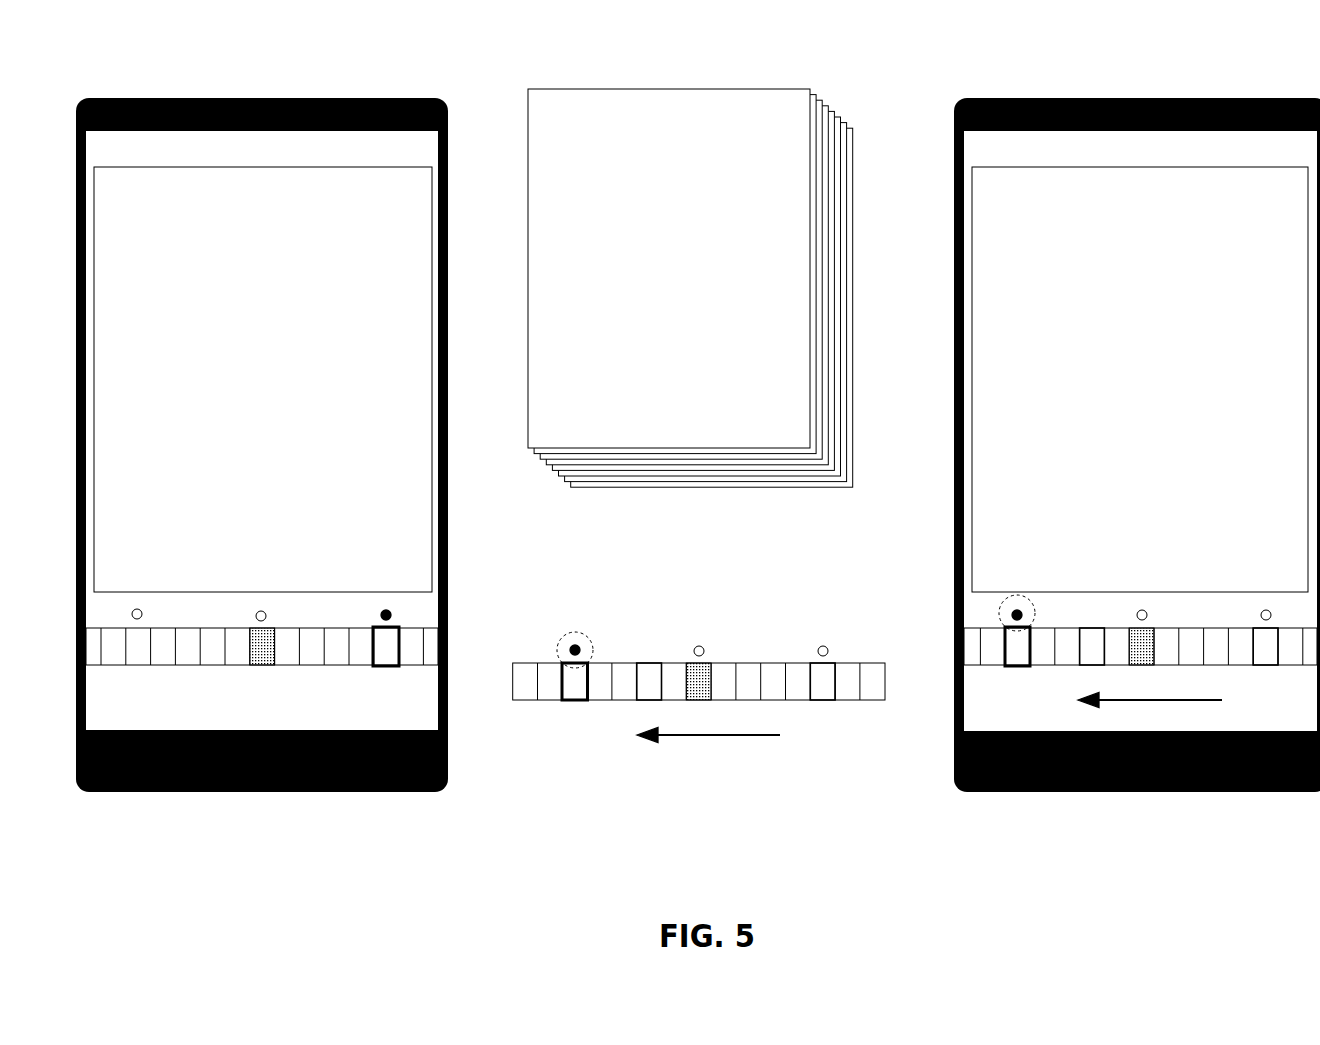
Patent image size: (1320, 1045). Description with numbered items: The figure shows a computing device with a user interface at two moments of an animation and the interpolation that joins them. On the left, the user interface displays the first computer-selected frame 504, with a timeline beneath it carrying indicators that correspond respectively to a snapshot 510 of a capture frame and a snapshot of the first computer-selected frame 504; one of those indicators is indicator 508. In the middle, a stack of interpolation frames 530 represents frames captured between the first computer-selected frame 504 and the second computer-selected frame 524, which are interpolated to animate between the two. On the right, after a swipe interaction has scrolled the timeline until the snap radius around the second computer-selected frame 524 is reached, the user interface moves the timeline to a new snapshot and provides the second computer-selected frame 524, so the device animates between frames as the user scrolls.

The first computer-selected frame 504 is at (382, 196).
The indicator 508 is at (265, 612).
The snapshot of a capture frame 510 is at (262, 648).
The second computer-selected frame 524 is at (1262, 196).
The interpolation frame 530 is at (811, 90).